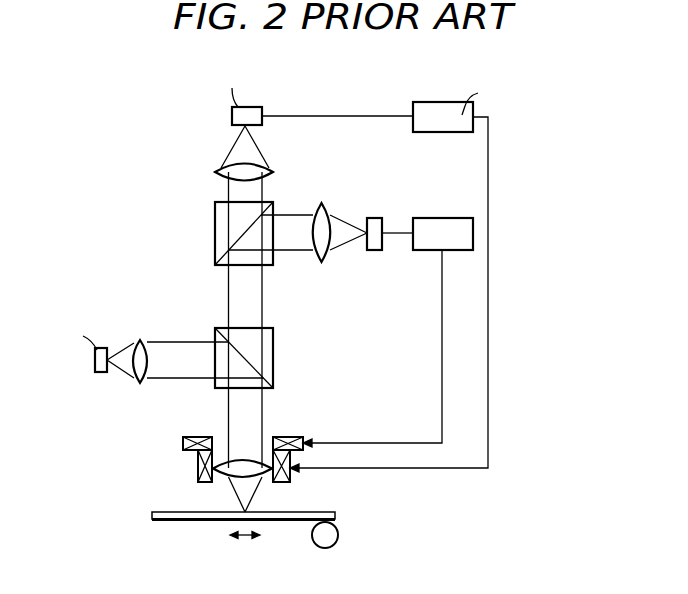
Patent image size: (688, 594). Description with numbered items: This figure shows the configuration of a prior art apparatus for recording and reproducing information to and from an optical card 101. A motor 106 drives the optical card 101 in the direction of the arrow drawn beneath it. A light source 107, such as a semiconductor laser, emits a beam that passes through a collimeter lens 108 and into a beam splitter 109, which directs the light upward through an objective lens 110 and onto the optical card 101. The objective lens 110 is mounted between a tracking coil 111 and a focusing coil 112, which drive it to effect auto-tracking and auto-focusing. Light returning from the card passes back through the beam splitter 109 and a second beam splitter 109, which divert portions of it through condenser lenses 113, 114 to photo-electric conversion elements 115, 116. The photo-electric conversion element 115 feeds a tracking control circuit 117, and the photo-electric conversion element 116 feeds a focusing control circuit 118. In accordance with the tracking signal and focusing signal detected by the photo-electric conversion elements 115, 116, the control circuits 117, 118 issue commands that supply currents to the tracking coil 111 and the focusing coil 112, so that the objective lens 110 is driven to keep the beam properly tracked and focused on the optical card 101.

The optical card 101 is at (168, 521).
The motor 106 is at (338, 535).
The light source 107 is at (101, 372).
The collimeter lens 108 is at (144, 372).
The beam splitter 109 is at (215, 210).
The objective lens 110 is at (242, 460).
The tracking coil 111 is at (302, 438).
The focusing coil 112 is at (291, 480).
The condenser lens 113 is at (321, 205).
The condenser lens 114 is at (216, 170).
The photo-electric conversion element 115 is at (375, 218).
The photo-electric conversion element 116 is at (255, 107).
The tracking control circuit 117 is at (455, 218).
The focusing control circuit 118 is at (458, 101).